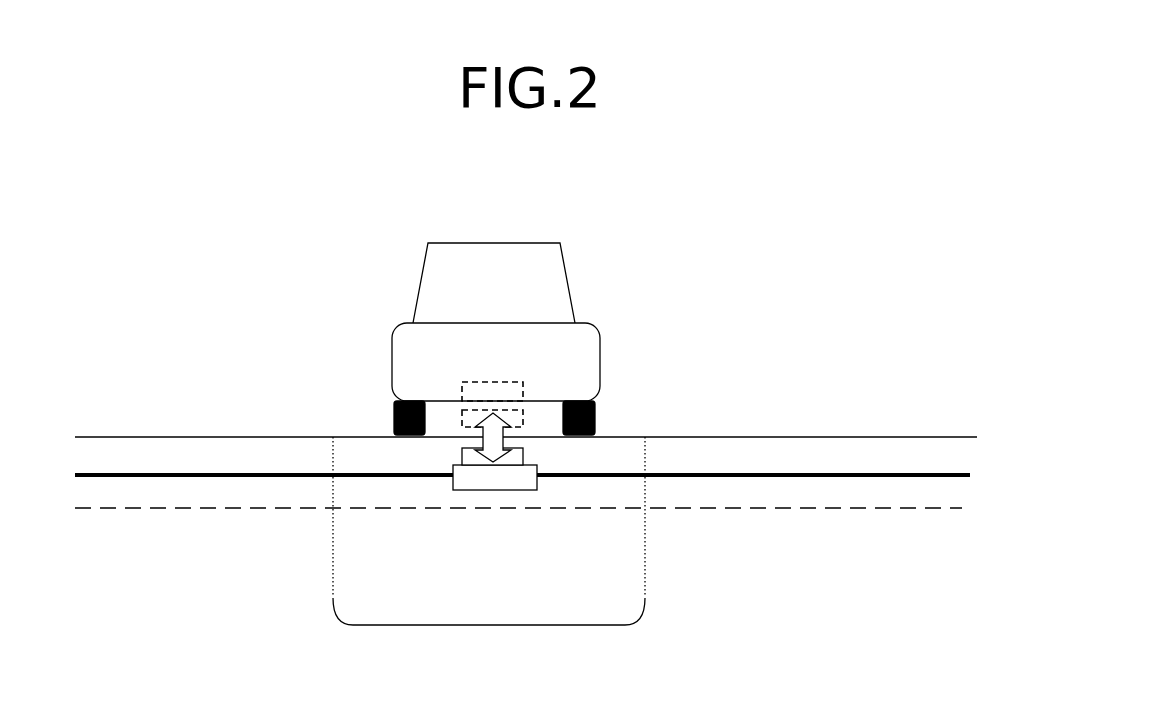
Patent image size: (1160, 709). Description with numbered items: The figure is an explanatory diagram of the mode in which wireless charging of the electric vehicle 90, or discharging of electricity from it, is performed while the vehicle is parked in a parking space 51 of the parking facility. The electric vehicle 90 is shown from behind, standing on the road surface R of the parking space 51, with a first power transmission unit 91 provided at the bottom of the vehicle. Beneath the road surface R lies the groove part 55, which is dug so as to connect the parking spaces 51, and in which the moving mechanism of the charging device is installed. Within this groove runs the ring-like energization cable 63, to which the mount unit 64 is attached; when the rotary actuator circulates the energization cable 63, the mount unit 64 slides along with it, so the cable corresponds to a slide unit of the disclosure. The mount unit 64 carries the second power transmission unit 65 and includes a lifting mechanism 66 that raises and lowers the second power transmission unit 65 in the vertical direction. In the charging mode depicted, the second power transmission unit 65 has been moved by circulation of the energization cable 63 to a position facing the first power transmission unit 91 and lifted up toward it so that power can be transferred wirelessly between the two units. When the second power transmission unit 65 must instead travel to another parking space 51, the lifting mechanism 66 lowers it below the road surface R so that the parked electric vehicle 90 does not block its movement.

The electric vehicle 90 is at (492, 243).
The first power transmission unit 91 is at (520, 382).
The road surface R is at (684, 418).
The energization cable 63 is at (763, 473).
The groove part 55 is at (838, 495).
The mount unit 64 is at (493, 490).
The second power transmission unit 65 is at (457, 452).
The lifting mechanism 66 is at (500, 440).
The parking space 51 is at (488, 625).